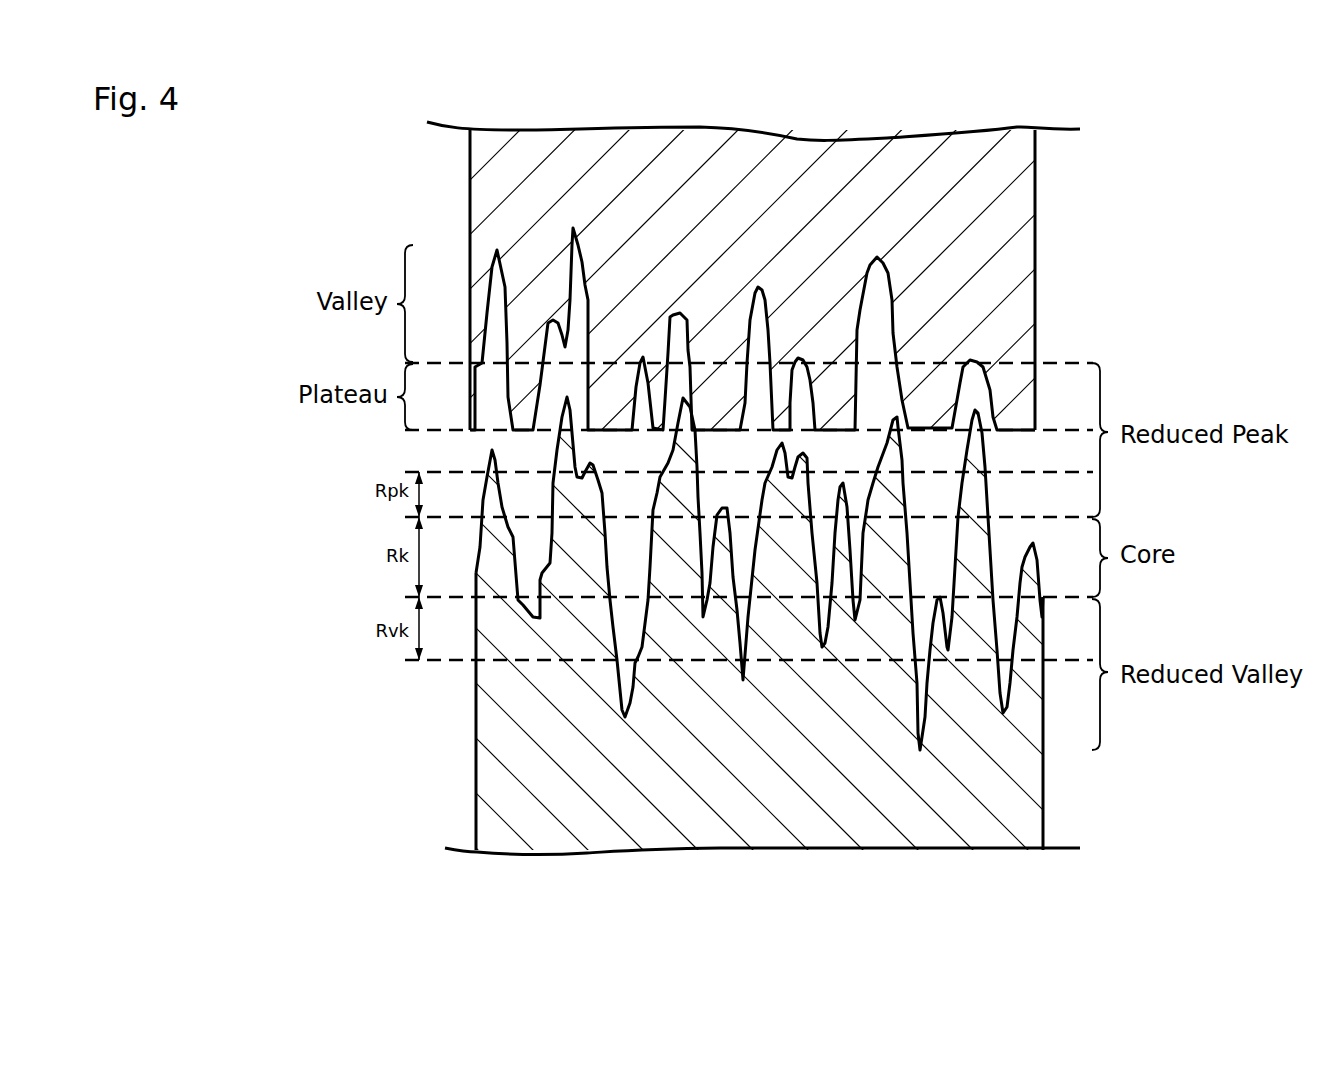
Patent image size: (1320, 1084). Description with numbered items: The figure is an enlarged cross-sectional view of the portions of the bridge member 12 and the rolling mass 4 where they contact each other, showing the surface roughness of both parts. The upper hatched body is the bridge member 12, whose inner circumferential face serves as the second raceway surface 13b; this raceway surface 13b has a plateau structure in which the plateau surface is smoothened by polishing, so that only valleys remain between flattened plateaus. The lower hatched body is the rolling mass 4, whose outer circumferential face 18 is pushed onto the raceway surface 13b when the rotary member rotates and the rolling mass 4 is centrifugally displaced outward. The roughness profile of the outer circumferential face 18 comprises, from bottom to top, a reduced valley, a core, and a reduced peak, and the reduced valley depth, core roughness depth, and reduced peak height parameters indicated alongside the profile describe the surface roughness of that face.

The bridge member 12 is at (751, 242).
The second raceway surface 13b is at (755, 148).
The outer circumferential face 18 is at (743, 813).
The rolling mass 4 is at (762, 542).